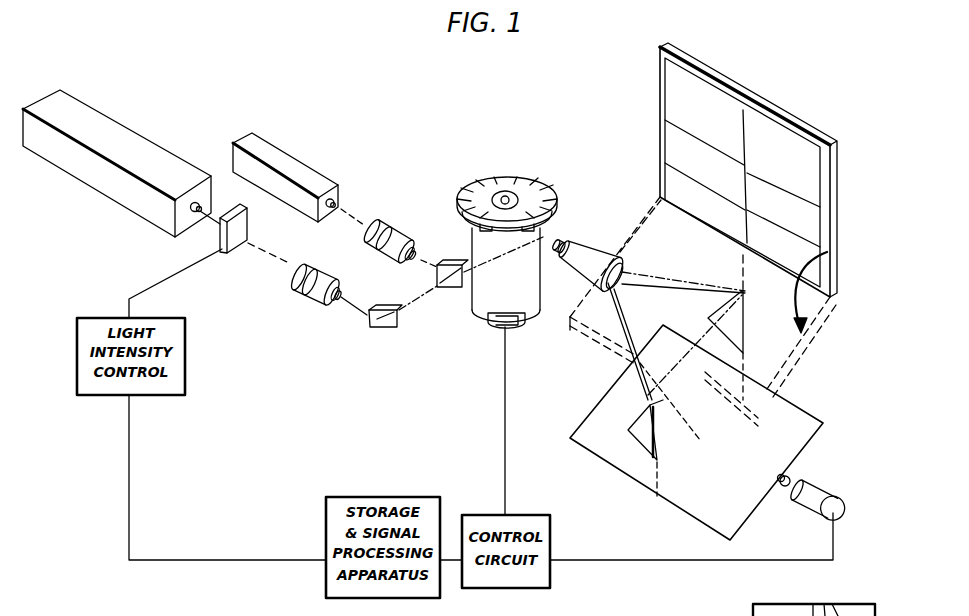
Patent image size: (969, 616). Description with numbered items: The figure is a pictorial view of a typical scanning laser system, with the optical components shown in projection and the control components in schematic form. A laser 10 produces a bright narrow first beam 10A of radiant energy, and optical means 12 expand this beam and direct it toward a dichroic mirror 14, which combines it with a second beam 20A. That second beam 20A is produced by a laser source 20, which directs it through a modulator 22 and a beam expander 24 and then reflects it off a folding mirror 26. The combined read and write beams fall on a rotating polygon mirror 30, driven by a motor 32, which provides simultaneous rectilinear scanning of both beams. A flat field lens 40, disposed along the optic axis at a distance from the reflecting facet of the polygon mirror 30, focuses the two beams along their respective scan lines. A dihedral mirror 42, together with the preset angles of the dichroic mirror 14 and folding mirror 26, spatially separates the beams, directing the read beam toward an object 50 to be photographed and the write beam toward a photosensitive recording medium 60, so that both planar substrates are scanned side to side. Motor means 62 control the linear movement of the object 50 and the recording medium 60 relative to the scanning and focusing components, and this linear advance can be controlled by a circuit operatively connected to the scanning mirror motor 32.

The laser 10 is at (283, 163).
The first radiant energy beam 10A is at (354, 217).
The optical means 12 is at (382, 219).
The dichroic mirror 14 is at (447, 263).
The laser source 20 is at (130, 152).
The second radiant energy beam 20A is at (423, 302).
The modulator 22 is at (240, 254).
The beam expander 24 is at (312, 287).
The folding mirror 26 is at (385, 328).
The rotating polygon mirror 30 is at (508, 175).
The motor 32 is at (527, 318).
The flat field lens 40 is at (587, 245).
The dihedral mirror 42 is at (747, 307).
The object 50 is at (832, 157).
The photosensitive recording medium 60 is at (790, 398).
The motor means 62 is at (822, 482).